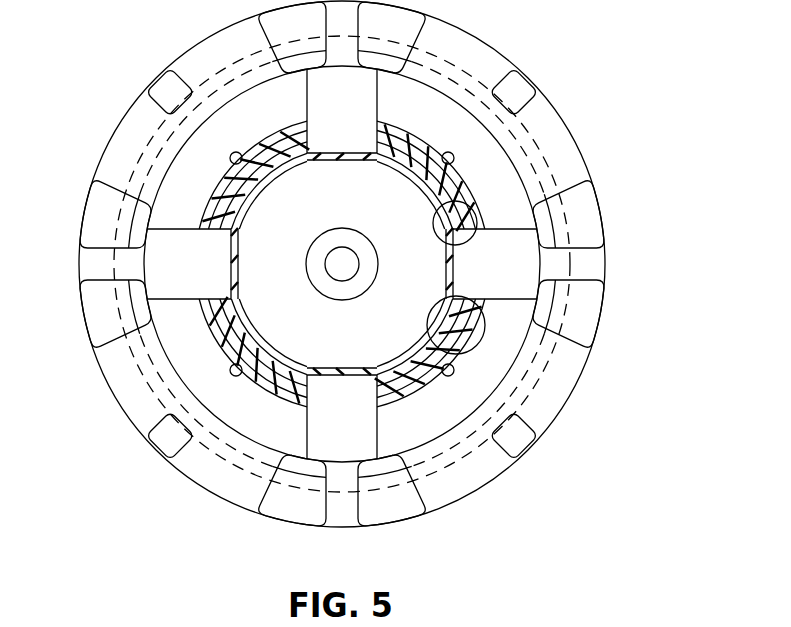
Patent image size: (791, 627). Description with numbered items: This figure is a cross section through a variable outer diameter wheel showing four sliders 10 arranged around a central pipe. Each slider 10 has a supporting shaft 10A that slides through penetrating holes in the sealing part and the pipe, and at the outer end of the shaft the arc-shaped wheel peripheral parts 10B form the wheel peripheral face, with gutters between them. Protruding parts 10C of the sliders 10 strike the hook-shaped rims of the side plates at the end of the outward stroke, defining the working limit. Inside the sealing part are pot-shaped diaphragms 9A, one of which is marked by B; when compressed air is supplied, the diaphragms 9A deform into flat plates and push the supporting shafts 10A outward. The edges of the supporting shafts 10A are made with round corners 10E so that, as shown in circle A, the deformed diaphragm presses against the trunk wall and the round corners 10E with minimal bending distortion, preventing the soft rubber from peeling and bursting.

The slider 10 is at (143, 265).
The supporting shaft 10A is at (378, 97).
The arc-shaped wheel peripheral part 10B is at (207, 50).
The protruding part 10C is at (547, 220).
The round corner 10E is at (468, 290).
The diaphragm 9A is at (432, 242).
The circle A is at (452, 205).
The mark B is at (465, 353).